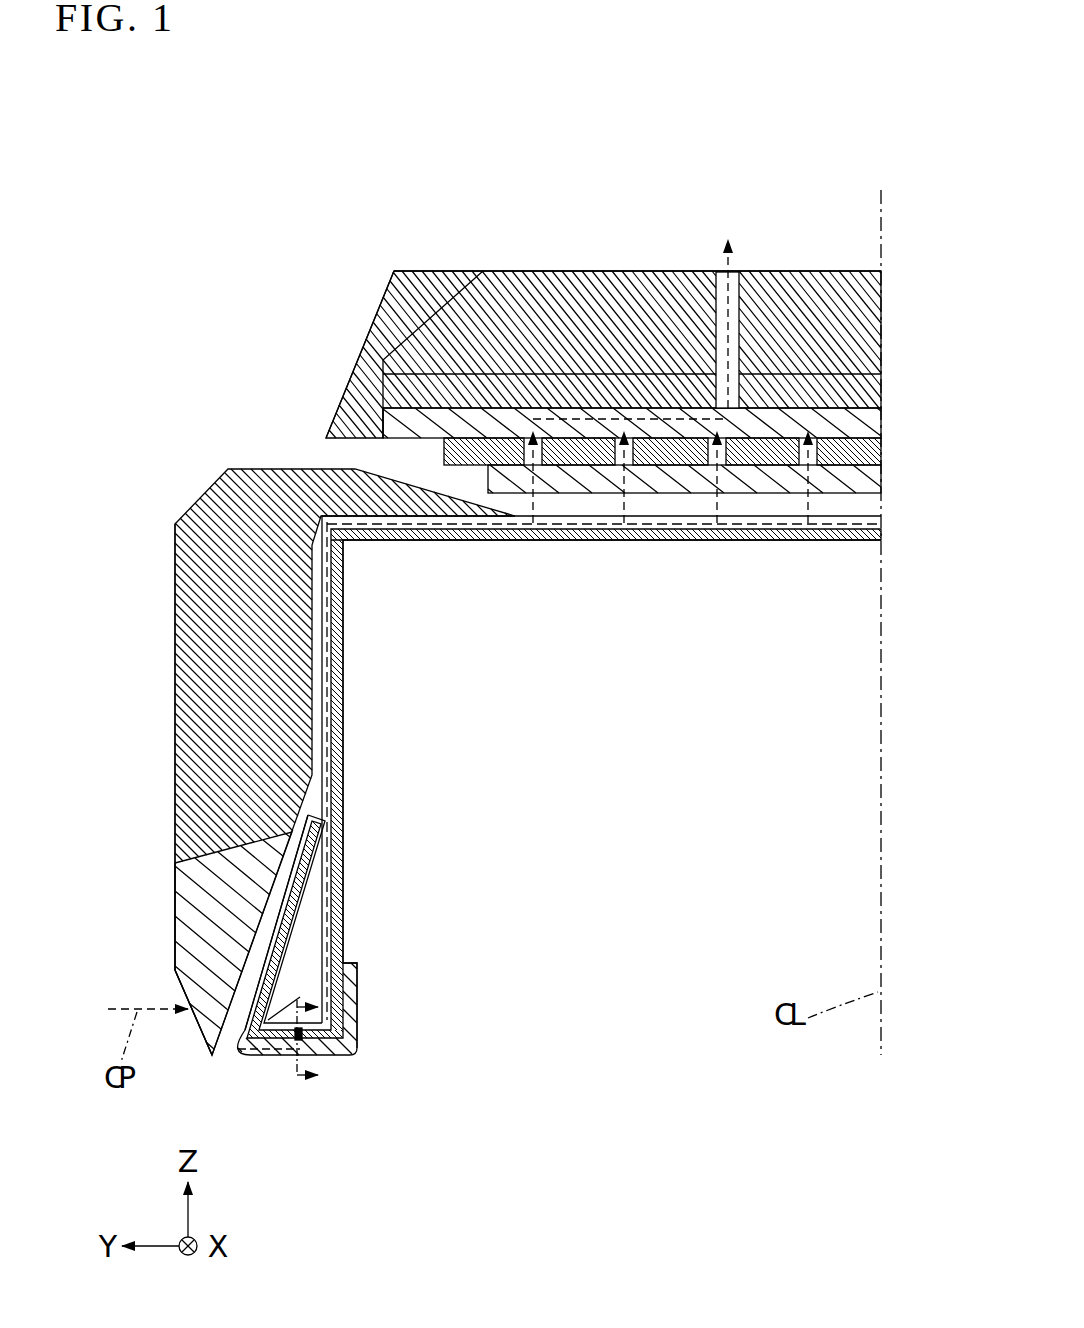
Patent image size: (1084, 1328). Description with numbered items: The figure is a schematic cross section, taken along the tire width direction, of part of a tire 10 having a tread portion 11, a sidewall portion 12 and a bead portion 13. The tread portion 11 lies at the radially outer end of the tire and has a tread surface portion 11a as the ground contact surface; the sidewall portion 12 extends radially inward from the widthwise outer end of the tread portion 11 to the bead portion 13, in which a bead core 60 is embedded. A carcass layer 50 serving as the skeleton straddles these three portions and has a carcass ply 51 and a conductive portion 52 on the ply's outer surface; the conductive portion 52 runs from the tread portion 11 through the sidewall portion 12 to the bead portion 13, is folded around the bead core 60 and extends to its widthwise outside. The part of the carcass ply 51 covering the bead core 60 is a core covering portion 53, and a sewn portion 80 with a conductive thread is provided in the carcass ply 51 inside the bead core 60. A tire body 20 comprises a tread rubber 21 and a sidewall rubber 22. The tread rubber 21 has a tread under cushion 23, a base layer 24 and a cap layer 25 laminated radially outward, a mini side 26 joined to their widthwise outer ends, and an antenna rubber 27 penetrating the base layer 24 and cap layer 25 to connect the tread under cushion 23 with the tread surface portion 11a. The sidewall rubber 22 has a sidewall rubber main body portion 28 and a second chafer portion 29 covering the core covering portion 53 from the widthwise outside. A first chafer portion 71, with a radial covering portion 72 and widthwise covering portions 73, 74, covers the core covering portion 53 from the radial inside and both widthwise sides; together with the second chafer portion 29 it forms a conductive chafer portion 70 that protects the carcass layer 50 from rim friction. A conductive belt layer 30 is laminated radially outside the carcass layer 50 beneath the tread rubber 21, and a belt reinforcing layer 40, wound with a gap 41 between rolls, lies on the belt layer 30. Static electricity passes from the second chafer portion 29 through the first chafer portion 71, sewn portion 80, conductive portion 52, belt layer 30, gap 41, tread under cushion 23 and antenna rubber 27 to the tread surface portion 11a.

The tire 10 is at (848, 146).
The tread portion 11 is at (643, 288).
The tread surface portion 11a is at (660, 270).
The sidewall portion 12 is at (279, 657).
The bead portion 13 is at (500, 834).
The tire body 20 is at (305, 262).
The tread rubber 21 is at (366, 327).
The sidewall rubber 22 is at (265, 462).
The tread under cushion 23 is at (875, 425).
The base layer 24 is at (880, 386).
The cap layer 25 is at (585, 290).
The mini side 26 is at (425, 290).
The antenna rubber 27 is at (733, 300).
The sidewall rubber main body portion 28 is at (190, 706).
The second chafer portion 29 is at (185, 933).
The belt layer 30 is at (860, 481).
The belt reinforcing layer 40 is at (870, 456).
The gap 41 is at (727, 478).
The carcass layer 50 is at (564, 777).
The carcass ply 51 is at (570, 542).
The conductive portion 52 is at (482, 542).
The core covering portion 53 is at (348, 927).
The bead core 60 is at (318, 1005).
The chafer portion 70 is at (168, 943).
The first chafer portion 71 is at (234, 994).
The radial covering portion 72 is at (330, 1060).
The widthwise covering portion 73 is at (257, 968).
The widthwise covering portion 74 is at (352, 985).
The sewn portion 80 is at (299, 1041).